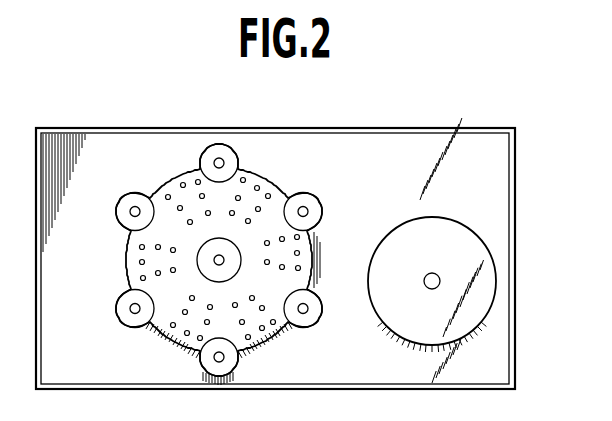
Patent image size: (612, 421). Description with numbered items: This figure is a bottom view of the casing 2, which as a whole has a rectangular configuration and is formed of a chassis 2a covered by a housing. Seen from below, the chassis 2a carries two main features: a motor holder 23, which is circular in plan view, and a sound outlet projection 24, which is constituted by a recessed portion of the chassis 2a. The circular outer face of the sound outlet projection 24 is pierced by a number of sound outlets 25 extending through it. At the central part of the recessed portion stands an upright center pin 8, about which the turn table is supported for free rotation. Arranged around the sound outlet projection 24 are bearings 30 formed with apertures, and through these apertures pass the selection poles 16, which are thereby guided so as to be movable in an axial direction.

The casing 2 is at (515, 156).
The chassis 2a is at (515, 297).
The center pin 8 is at (224, 262).
The selection pole 16 is at (307, 304).
The motor holder 23 is at (470, 221).
The sound outlet projection 24 is at (125, 251).
The sound outlets 25 is at (176, 327).
The bearing 30 is at (312, 202).